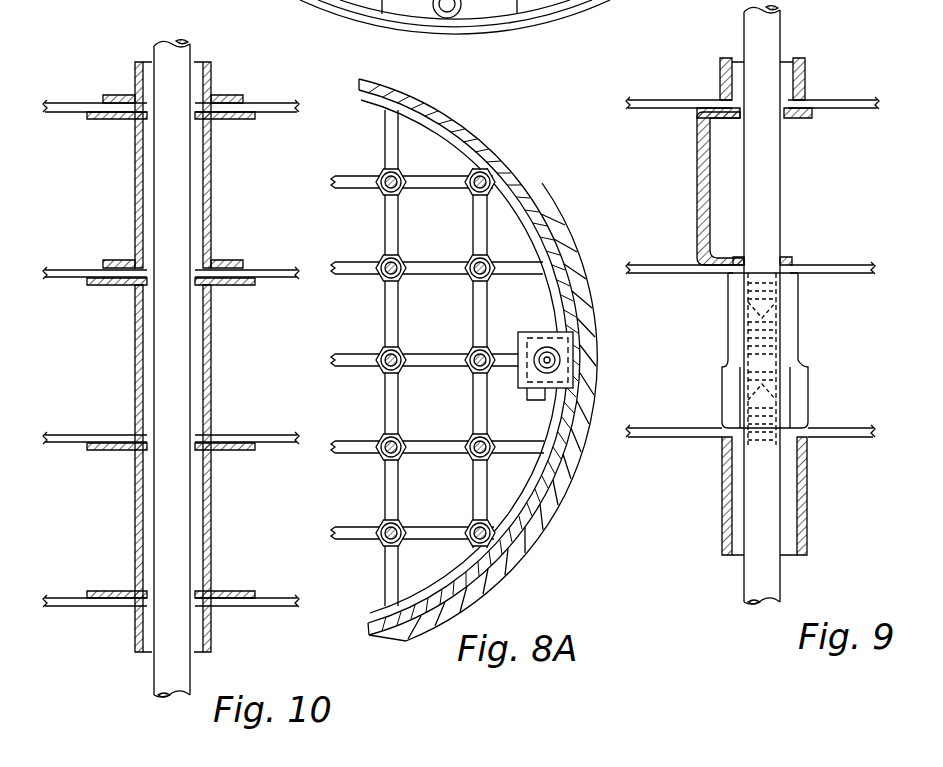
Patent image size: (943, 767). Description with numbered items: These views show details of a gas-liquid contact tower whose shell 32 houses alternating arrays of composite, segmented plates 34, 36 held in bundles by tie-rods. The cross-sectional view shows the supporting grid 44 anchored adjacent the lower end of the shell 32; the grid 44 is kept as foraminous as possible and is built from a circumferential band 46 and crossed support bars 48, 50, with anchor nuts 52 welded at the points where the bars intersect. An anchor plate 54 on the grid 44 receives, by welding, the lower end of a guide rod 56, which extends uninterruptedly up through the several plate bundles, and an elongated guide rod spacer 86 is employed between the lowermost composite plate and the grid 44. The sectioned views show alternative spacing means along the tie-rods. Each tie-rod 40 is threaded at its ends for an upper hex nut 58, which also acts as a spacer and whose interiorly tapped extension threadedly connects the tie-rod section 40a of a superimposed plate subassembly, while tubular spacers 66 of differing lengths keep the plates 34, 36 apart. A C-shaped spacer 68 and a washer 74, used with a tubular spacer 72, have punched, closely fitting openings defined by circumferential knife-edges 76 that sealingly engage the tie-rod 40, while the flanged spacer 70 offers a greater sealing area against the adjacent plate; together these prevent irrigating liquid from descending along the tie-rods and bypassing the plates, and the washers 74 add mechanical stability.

In FIG. 8A, the shell 32 is at (590, 410).
In FIG. 10, the plate 34 is at (269, 103).
In FIG. 9, the plate 34 is at (838, 265).
In FIG. 10, the plate 36 is at (68, 270).
In FIG. 9, the plate 36 is at (835, 100).
In FIG. 10, the tie-rod 40 is at (183, 512).
In FIG. 9, the tie-rod 40 is at (768, 492).
In FIG. 9, the tie-rod section 40a is at (768, 195).
In FIG. 8A, the supporting grid 44 is at (498, 148).
In FIG. 8A, the circumferential band 46 is at (538, 192).
In FIG. 8A, the support bar 48 is at (472, 205).
In FIG. 8A, the support bar 50 is at (440, 352).
In FIG. 8A, the anchor nut 52 is at (470, 375).
In FIG. 8A, the anchor plate 54 is at (572, 330).
In FIG. 8A, the guide rod 56 is at (557, 358).
In FIG. 9, the upper hex nut 58 is at (790, 332).
In FIG. 9, the tubular spacer 66 is at (806, 515).
In FIG. 9, the C-shaped spacer 68 is at (697, 166).
In FIG. 10, the flanged spacer 70 is at (133, 186).
In FIG. 10, the tubular spacer 72 is at (133, 360).
In FIG. 10, the washer 74 is at (100, 286).
In FIG. 9, the knife-edge 76 is at (744, 118).
In FIG. 8A, the elongated guide rod spacer 86 is at (548, 392).